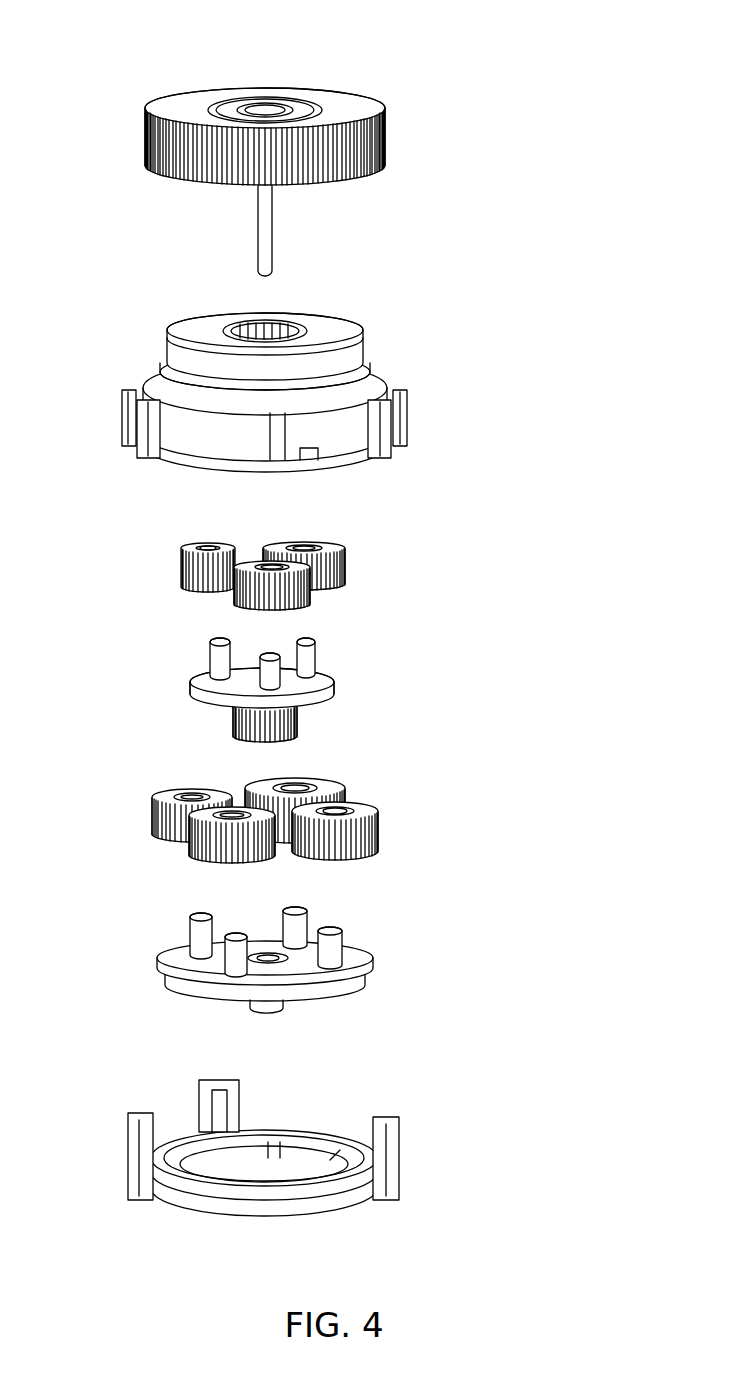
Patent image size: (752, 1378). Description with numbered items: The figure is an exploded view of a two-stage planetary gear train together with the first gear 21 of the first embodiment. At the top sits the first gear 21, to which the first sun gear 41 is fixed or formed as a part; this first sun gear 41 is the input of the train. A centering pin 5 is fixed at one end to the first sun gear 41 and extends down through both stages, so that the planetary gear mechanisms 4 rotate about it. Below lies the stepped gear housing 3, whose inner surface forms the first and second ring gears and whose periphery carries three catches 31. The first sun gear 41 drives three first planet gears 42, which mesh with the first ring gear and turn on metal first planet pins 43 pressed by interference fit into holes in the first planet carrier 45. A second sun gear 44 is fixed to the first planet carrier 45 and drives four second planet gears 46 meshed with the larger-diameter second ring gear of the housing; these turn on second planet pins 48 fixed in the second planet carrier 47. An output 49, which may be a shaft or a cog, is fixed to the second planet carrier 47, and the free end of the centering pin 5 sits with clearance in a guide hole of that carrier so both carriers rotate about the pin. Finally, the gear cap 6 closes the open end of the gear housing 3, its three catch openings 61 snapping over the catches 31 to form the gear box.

The planetary gear mechanisms 4 is at (520, 570).
The first gear 21 is at (350, 127).
The first sun gear 41 is at (272, 104).
The centering pin 5 is at (270, 242).
The gear housing 3 is at (323, 380).
The catches 31 is at (363, 407).
The first planet gears 42 is at (340, 553).
The first planet pins 43 is at (307, 657).
The second sun gear 44 is at (290, 720).
The first planet carrier 45 is at (203, 673).
The second planet gears 46 is at (340, 813).
The second planet carrier 47 is at (373, 953).
The second planet pins 48 is at (323, 945).
The output 49 is at (287, 1006).
The gear cap 6 is at (400, 1154).
The catch openings 61 is at (199, 1122).